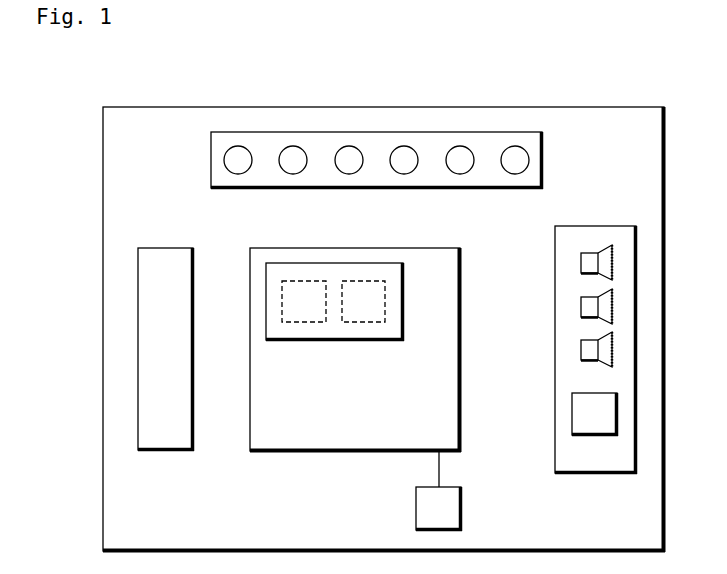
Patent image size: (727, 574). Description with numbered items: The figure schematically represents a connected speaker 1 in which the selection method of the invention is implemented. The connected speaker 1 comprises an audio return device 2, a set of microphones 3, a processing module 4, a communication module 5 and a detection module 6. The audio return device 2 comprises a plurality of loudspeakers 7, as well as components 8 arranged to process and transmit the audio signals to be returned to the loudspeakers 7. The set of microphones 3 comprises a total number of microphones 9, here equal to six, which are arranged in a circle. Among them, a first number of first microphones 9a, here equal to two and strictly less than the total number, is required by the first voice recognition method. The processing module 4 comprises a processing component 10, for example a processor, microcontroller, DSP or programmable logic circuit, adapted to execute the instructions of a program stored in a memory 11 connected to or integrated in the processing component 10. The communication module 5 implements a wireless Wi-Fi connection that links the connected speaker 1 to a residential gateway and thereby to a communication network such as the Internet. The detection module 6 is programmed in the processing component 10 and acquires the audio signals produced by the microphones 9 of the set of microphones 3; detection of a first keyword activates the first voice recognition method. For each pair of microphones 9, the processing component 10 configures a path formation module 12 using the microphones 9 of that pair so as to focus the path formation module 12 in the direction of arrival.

The connected speaker 1 is at (593, 107).
The audio return device 2 is at (636, 304).
The set of microphones 3 is at (343, 132).
The processing module 4 is at (462, 345).
The communication module 5 is at (138, 313).
The detection module 6 is at (300, 318).
The loudspeakers 7 is at (610, 262).
The components 8 is at (608, 413).
The microphones 9 is at (236, 146).
The first microphones 9a is at (457, 150).
The processing component 10 is at (327, 263).
The memory 11 is at (455, 505).
The path formation module 12 is at (364, 318).